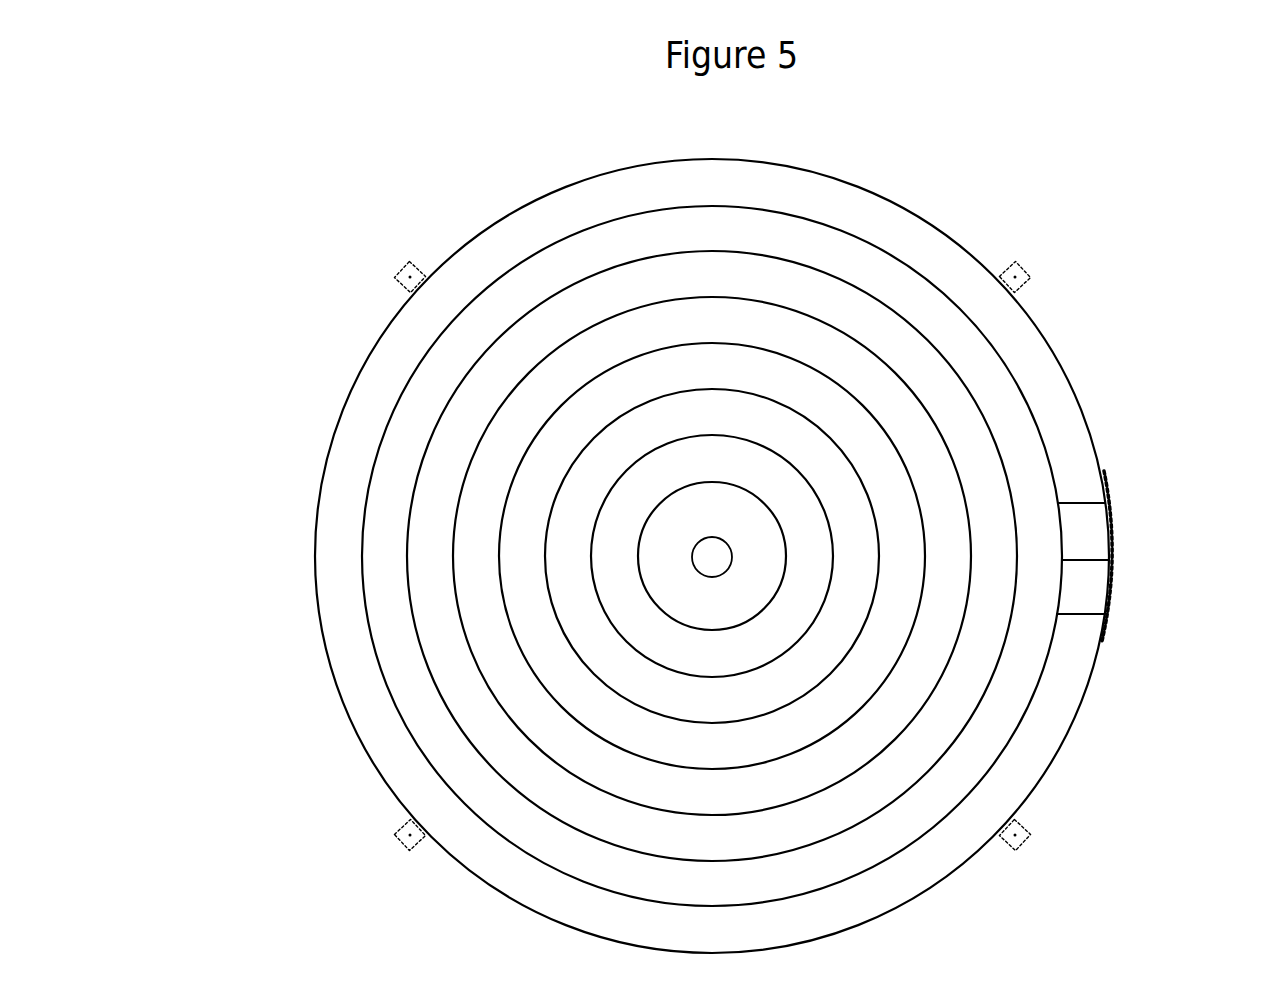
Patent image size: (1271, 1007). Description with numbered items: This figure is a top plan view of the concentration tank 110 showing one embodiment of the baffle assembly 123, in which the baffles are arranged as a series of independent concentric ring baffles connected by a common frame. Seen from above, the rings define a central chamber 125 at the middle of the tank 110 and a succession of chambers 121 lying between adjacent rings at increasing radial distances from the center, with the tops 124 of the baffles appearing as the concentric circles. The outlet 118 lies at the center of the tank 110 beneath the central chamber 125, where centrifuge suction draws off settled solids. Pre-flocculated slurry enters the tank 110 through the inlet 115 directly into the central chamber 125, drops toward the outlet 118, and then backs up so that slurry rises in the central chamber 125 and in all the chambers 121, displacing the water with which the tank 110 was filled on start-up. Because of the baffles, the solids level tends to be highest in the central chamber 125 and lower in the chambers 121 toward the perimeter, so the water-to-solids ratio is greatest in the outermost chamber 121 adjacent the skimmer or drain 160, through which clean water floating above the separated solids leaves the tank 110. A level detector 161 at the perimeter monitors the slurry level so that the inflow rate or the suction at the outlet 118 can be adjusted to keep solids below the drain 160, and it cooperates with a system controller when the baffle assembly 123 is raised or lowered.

The concentration tank 110 is at (360, 373).
The inlet 115 is at (1043, 375).
The outlet 118 is at (712, 558).
The chambers 121 is at (478, 415).
The baffle assembly 123 is at (918, 200).
The tops of baffles 124 is at (365, 503).
The central chamber 125 is at (727, 603).
The skimmer or drain 160 is at (1111, 541).
The level detector 161 is at (1100, 504).